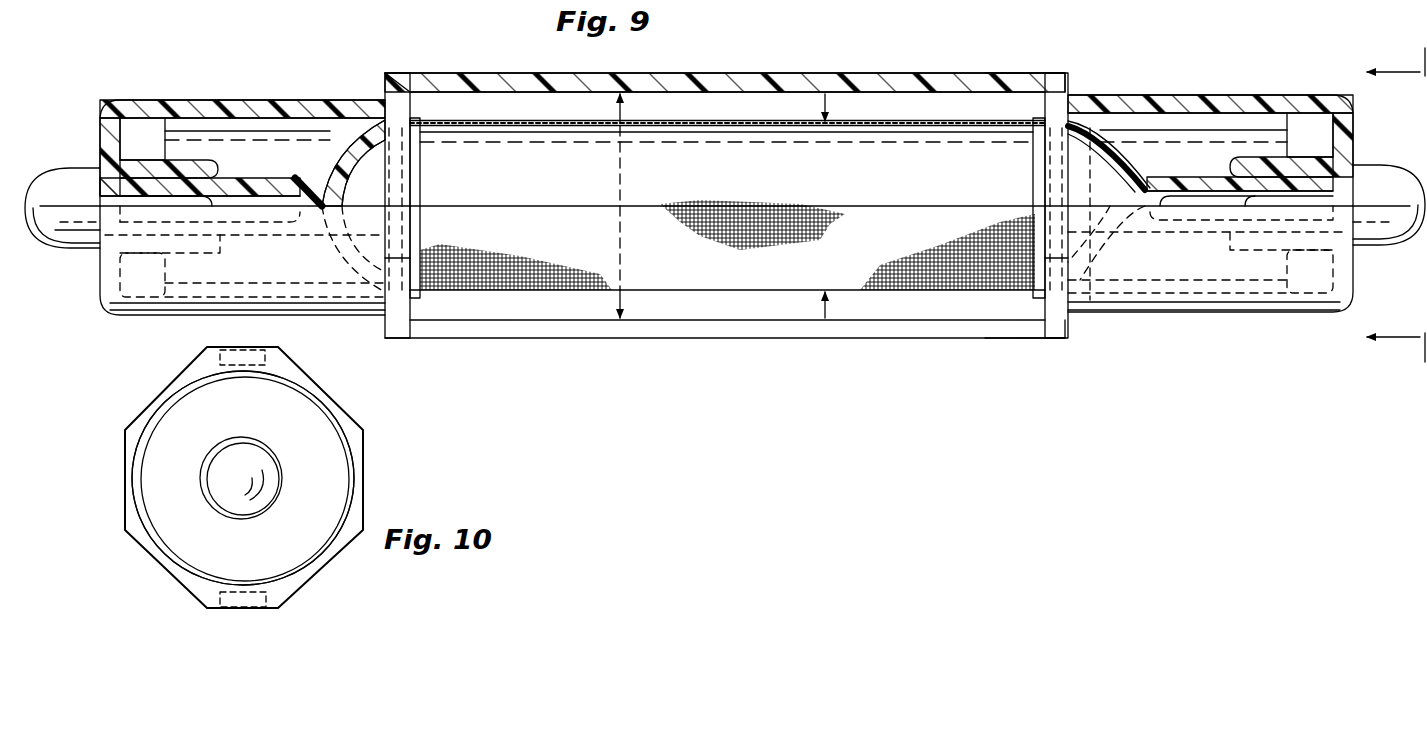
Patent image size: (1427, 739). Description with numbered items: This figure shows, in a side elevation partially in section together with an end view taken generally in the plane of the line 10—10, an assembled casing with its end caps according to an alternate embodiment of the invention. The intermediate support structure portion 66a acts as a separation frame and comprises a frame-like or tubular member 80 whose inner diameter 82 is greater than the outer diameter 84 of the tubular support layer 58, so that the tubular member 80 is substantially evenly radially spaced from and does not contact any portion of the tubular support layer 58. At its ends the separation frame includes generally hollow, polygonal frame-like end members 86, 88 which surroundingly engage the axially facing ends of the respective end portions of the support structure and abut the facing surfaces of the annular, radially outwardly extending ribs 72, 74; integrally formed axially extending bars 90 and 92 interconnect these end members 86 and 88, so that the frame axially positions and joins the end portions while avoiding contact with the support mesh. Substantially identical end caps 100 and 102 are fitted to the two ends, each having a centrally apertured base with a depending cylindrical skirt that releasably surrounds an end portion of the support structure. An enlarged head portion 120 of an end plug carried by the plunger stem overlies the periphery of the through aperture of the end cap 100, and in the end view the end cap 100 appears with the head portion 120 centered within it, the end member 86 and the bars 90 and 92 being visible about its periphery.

In FIG. 9, the line 10— 10 is at (1397, 203).
In FIG. 9, the tubular support layer 58 is at (754, 279).
In FIG. 9, the intermediate support structure portion 66a is at (492, 68).
In FIG. 9, the annular rib 72 is at (1075, 97).
In FIG. 9, the annular rib 74 is at (385, 97).
In FIG. 9, the frame-like or tubular member 80 is at (745, 72).
In FIG. 9, the inner diameter 82 is at (623, 105).
In FIG. 9, the outer diameter 84 is at (828, 105).
In FIG. 9, the frame-like end member 86 is at (1058, 330).
In FIG. 10, the frame-like end member 86 is at (162, 386).
In FIG. 9, the frame-like end member 88 is at (398, 334).
In FIG. 9, the axially extending bar 90 is at (983, 73).
In FIG. 10, the axially extending bar 90 is at (206, 353).
In FIG. 9, the axially extending bar 92 is at (998, 330).
In FIG. 10, the axially extending bar 92 is at (220, 598).
In FIG. 9, the end cap 100 is at (1208, 96).
In FIG. 10, the end cap 100 is at (300, 420).
In FIG. 9, the end cap 102 is at (236, 98).
In FIG. 9, the head portion 120 is at (1385, 182).
In FIG. 10, the head portion 120 is at (225, 457).